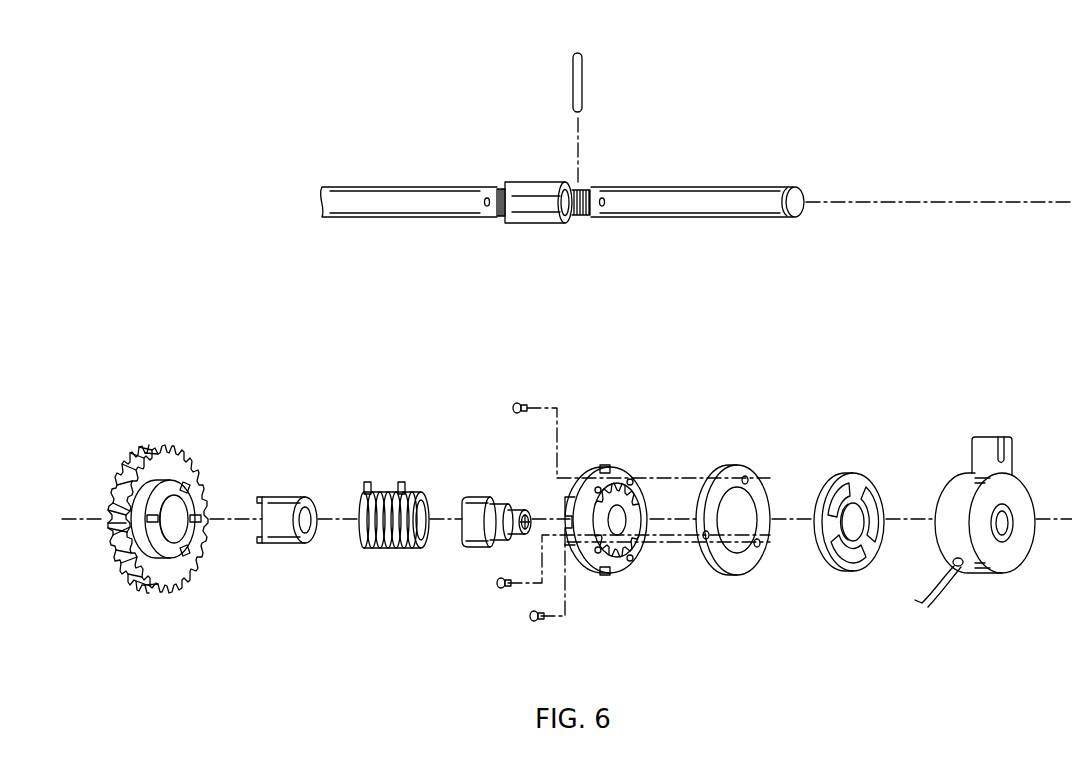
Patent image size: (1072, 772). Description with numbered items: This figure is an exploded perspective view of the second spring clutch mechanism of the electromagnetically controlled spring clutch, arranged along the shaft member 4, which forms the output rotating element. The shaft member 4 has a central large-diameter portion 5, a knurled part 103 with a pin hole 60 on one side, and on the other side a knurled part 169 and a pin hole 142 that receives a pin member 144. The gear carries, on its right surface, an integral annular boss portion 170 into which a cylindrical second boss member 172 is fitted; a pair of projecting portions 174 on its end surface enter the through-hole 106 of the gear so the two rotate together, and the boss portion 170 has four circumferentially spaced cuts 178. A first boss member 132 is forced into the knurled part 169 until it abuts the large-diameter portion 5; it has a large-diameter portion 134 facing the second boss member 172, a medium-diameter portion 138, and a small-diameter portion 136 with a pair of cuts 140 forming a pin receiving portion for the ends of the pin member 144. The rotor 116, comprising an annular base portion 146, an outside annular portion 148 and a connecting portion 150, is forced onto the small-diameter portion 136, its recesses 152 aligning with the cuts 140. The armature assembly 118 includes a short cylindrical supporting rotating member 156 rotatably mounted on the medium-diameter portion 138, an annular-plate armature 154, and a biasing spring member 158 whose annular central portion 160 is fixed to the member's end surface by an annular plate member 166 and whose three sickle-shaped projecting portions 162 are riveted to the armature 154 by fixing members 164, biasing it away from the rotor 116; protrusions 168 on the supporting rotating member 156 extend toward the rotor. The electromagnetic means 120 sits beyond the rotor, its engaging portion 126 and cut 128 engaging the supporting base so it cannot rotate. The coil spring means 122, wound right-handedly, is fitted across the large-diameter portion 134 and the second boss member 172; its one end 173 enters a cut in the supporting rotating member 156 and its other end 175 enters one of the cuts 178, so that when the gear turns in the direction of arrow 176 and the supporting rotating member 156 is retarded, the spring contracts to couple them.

The shaft member 4 is at (683, 220).
The large-diameter portion 5 is at (528, 190).
The pin hole 60 is at (486, 208).
The knurled part 103 is at (500, 217).
The pin hole 142 is at (603, 208).
The pin member 144 is at (583, 80).
The knurled part 169 is at (585, 193).
The through-hole 106 is at (192, 498).
The rotor 116 is at (870, 535).
The armature assembly 118 is at (642, 526).
The electromagnetic means 120 is at (975, 514).
The coil spring means 122 is at (386, 550).
The engaging portion 126 is at (975, 447).
The cut 128 is at (1002, 437).
The first boss member 132 is at (490, 515).
The large-diameter portion 134 is at (472, 532).
The small-diameter portion 136 is at (520, 509).
The medium-diameter portion 138 is at (498, 508).
The cuts 140 is at (526, 535).
The annular base portion 146 is at (858, 545).
The outside annular portion 148 is at (871, 484).
The connecting portion 150 is at (870, 530).
The recesses 152 is at (855, 490).
The armature 154 is at (731, 470).
The supporting rotating member 156 is at (571, 492).
The biasing spring member 158 is at (652, 506).
The annular central portion 160 is at (613, 490).
The projecting portions 162 is at (606, 465).
The fixing member 164 is at (522, 405).
The annular plate member 166 is at (633, 498).
The protrusions 168 is at (633, 552).
The annular boss portion 170 is at (158, 489).
The second boss member 172 is at (284, 498).
The one end of the coil spring means 173 is at (404, 484).
The projecting portions 174 is at (260, 540).
The other end of the coil spring means 175 is at (366, 484).
The arrow 176 is at (106, 470).
The cuts 178 is at (184, 484).